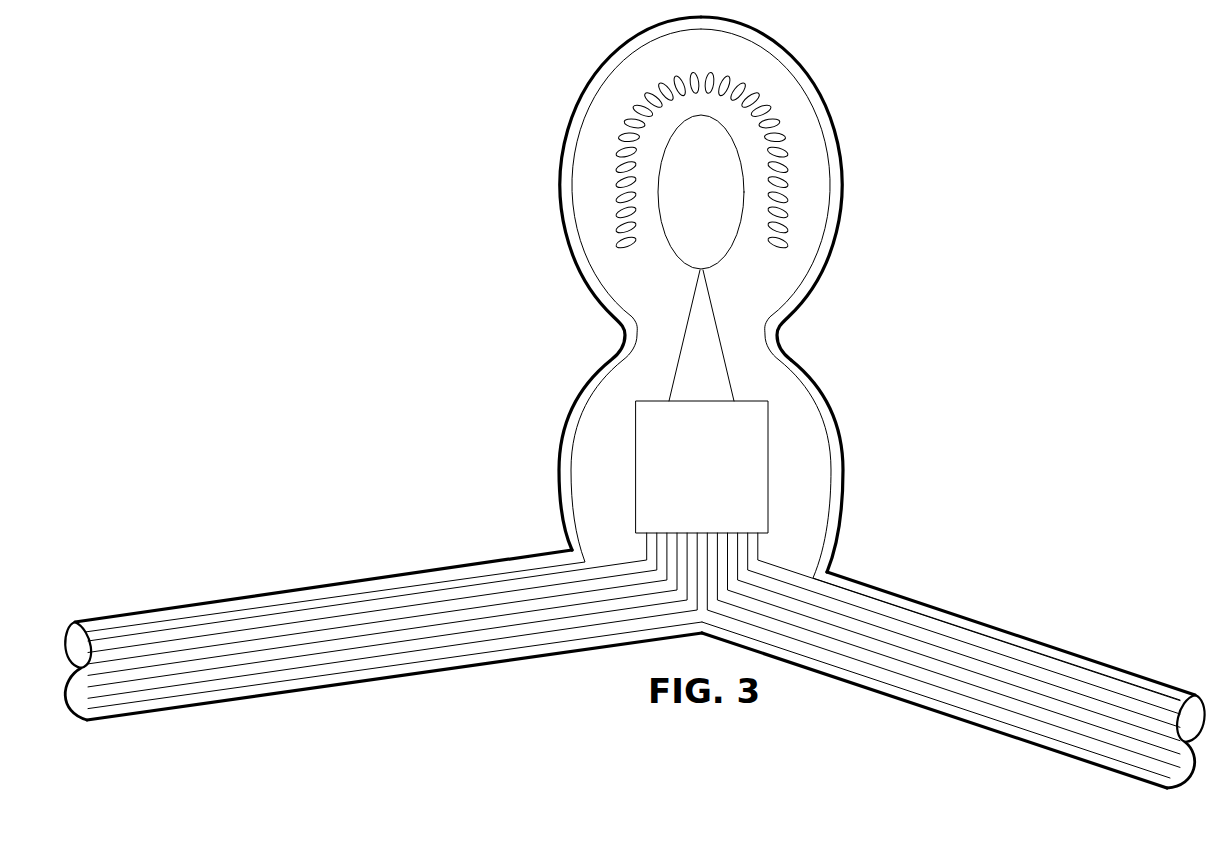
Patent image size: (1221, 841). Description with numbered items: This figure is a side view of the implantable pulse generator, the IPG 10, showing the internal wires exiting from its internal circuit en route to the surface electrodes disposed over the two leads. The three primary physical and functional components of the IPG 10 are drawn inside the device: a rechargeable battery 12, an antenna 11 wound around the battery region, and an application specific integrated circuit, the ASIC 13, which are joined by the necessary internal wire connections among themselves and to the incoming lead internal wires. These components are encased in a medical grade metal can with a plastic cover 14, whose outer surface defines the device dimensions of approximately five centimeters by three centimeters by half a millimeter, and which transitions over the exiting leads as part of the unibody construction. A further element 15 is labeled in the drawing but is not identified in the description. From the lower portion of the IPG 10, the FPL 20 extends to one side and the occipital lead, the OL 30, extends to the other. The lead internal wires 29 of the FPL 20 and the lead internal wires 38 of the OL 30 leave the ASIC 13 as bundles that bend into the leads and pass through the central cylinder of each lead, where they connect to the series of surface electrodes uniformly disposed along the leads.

The IPG 10 is at (846, 191).
The antenna 11 is at (640, 249).
The rechargeable battery 12 is at (718, 205).
The application specific integrated circuit (ASIC) 13 is at (718, 480).
The plastic cover 14 is at (847, 478).
The inner wall 15 is at (580, 190).
The FPL 20 is at (300, 590).
The lead internal wires 29 is at (395, 653).
The occipital lead (OL) 30 is at (1032, 638).
The lead internal wires 38 is at (929, 683).